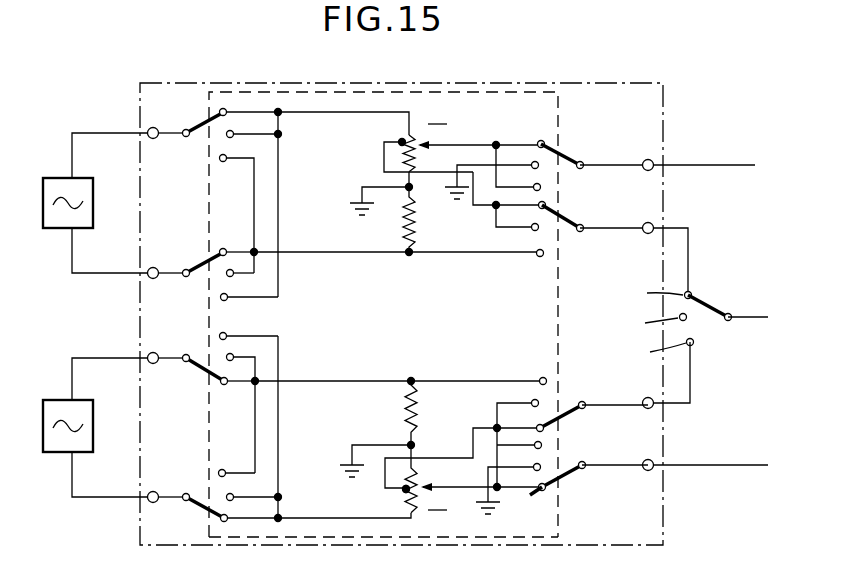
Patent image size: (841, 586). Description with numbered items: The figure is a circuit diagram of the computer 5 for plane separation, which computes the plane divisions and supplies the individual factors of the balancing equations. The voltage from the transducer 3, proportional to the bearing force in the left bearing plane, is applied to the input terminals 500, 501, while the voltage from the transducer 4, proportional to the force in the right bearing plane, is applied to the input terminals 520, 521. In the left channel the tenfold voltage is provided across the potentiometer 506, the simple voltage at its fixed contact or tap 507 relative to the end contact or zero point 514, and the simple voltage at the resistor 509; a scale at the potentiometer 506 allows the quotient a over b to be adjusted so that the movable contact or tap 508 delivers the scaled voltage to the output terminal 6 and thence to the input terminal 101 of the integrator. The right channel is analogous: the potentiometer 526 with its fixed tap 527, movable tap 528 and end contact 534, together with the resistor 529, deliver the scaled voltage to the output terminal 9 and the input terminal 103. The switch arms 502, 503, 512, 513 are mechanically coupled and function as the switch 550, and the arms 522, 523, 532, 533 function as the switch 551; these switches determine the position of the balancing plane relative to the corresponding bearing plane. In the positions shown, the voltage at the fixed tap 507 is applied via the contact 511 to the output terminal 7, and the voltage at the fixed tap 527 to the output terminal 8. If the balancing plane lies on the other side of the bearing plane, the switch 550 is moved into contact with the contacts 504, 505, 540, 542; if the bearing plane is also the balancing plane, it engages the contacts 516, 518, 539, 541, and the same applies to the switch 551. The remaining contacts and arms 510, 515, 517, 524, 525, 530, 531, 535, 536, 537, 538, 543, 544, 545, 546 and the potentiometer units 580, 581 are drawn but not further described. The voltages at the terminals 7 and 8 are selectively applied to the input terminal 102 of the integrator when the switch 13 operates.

The transducer 3 is at (94, 212).
The transducer 4 is at (94, 444).
The computer 5 is at (593, 83).
The output terminal 6 is at (656, 152).
The output terminal 7 is at (657, 216).
The output terminal 8 is at (643, 389).
The output terminal 9 is at (648, 449).
The switch 13 is at (725, 290).
The input terminal 101 is at (742, 150).
The input terminal 102 is at (729, 315).
The input terminal 103 is at (715, 463).
The input terminal 500 is at (157, 138).
The input terminal 501 is at (157, 278).
The switch arm 502 is at (199, 127).
The switch arm 503 is at (196, 262).
The contact 504 is at (226, 156).
The contact 505 is at (227, 295).
The potentiometer 506 is at (402, 140).
The fixed contact or tap 507 is at (384, 157).
The movable contact or tap 508 is at (450, 142).
The resistor 509 is at (407, 232).
The switch contact 510 is at (541, 143).
The contact 511 is at (555, 213).
The switch arm 512 is at (565, 156).
The switch arm 513 is at (582, 231).
The end contact or zero point 514 is at (412, 188).
The switch contact 515 is at (225, 109).
The contact 516 is at (281, 134).
The switch contact 517 is at (225, 247).
The contact 518 is at (233, 276).
The input terminal 520 is at (157, 363).
The input terminal 521 is at (157, 502).
The switch arm 522 is at (195, 352).
The switch arm 523 is at (199, 494).
The switch contact 524 is at (221, 334).
The switch contact 525 is at (222, 472).
The potentiometer 526 is at (403, 500).
The fixed contact or tap 527 is at (402, 490).
The movable contact or tap 528 is at (455, 477).
The resistor 529 is at (415, 420).
The switch contact 530 is at (533, 493).
The switch contact 531 is at (543, 378).
The switch arm 532 is at (583, 464).
The switch arm 533 is at (575, 402).
The end contact or zero point 534 is at (414, 445).
The switch contact 535 is at (233, 353).
The switch contact 536 is at (227, 385).
The switch contact 537 is at (233, 493).
The switch contact 538 is at (230, 527).
The contact 539 is at (545, 167).
The contact 540 is at (545, 189).
The contact 541 is at (530, 229).
The contact 542 is at (542, 257).
The switch contact 543 is at (535, 401).
The switch blade 544 is at (556, 421).
The switch contact 545 is at (542, 446).
The switch blade 546 is at (558, 478).
The switch 550 is at (493, 92).
The switch 551 is at (498, 537).
The potentiometer 580 is at (410, 133).
The potentiometer 581 is at (413, 514).